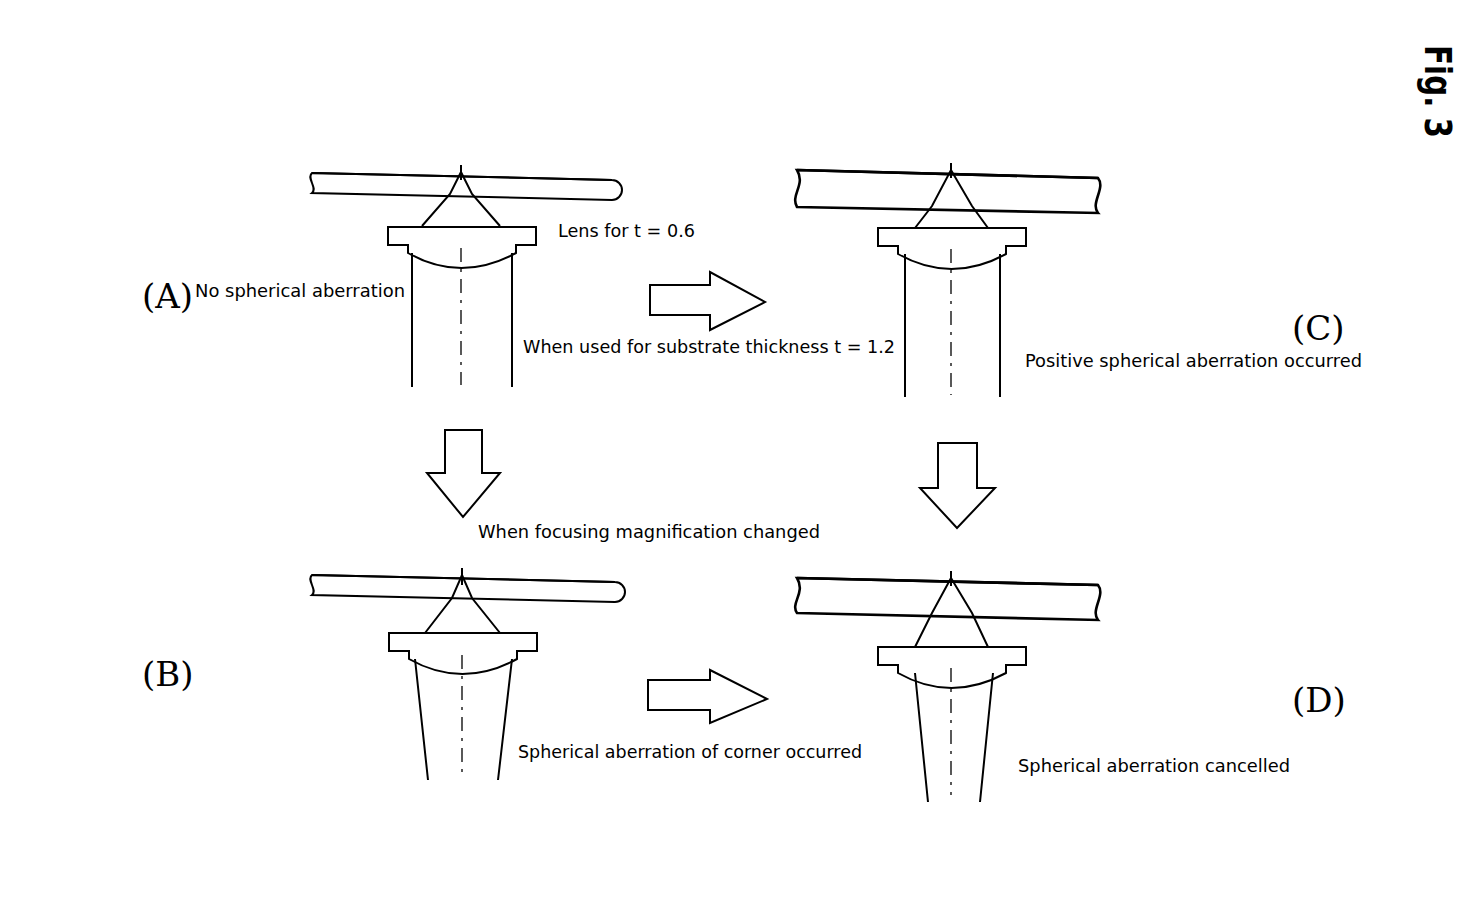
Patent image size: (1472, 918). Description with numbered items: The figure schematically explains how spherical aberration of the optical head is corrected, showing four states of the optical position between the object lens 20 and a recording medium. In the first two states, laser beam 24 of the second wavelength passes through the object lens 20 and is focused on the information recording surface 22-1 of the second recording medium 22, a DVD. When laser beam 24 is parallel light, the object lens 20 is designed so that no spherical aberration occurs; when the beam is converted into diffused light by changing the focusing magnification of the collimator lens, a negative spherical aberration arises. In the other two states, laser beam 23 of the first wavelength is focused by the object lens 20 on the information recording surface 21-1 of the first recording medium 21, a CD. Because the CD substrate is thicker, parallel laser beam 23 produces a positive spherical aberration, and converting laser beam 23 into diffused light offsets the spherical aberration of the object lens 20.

The object lens 20 is at (388, 230).
The first recording medium 21 is at (1105, 192).
The information recording surface of the first recording medium 21-1 is at (1037, 172).
The second recording medium 22 is at (565, 178).
The information recording surface of the second recording medium 22-1 is at (367, 172).
The laser beam 23 is at (1000, 303).
The laser beam 24 is at (414, 345).